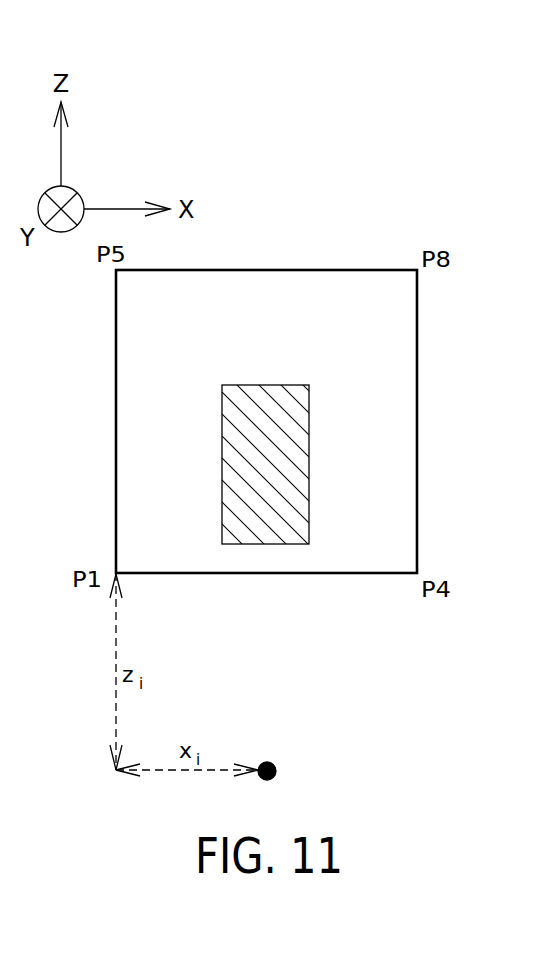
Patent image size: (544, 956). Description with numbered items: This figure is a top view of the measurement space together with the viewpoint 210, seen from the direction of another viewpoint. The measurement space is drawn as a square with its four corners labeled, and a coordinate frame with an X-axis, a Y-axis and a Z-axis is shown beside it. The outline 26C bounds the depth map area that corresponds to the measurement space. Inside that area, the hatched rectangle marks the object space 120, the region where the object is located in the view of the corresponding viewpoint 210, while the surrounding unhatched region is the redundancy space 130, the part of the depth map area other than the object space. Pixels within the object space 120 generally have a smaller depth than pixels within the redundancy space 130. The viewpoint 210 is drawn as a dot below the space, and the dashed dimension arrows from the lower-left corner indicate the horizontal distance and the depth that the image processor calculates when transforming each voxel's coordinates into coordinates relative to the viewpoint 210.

The panel 26C is at (342, 270).
The object space 120 is at (252, 515).
The redundancy space 130 is at (368, 535).
The viewpoint 210 is at (276, 770).